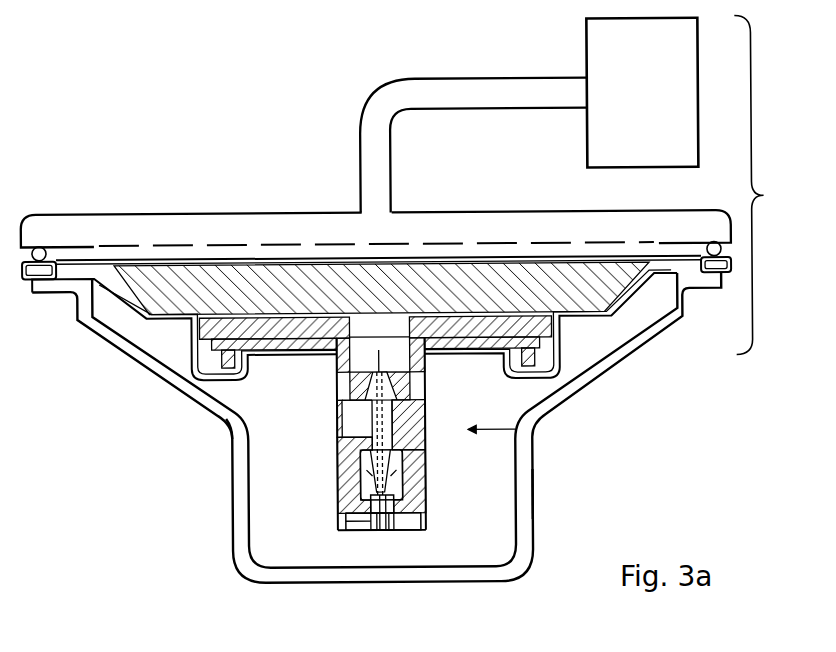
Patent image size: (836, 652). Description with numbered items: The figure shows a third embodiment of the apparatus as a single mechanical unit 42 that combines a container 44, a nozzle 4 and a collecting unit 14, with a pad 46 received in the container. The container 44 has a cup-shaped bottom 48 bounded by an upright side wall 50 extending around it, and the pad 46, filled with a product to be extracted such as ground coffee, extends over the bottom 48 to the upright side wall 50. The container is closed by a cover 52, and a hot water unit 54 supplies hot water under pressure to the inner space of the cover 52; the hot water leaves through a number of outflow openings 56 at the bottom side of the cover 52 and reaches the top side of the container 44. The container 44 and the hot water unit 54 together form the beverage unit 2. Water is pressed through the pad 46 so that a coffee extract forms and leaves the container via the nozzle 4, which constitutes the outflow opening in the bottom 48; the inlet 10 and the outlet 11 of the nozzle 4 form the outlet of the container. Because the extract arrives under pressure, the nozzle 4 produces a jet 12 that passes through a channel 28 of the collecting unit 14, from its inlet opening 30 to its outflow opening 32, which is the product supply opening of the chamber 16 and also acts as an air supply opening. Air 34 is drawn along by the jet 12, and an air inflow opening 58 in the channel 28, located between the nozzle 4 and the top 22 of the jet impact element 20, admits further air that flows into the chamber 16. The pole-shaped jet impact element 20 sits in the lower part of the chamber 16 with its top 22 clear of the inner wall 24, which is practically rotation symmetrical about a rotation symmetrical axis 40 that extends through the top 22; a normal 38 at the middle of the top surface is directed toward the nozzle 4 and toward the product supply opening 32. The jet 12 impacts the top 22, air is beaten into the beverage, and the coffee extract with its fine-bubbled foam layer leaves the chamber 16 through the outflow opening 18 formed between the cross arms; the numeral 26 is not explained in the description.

The beverage unit 2 is at (755, 184).
The nozzle 4 is at (432, 378).
The inlet 10 is at (346, 358).
The outlet 11 is at (440, 400).
The jet 12 is at (404, 488).
The collecting unit 14 is at (533, 434).
The chamber 16 is at (367, 482).
The outflow opening 18 is at (367, 522).
The jet impact element 20 is at (394, 505).
The top 22 is at (352, 522).
The inner wall 24 is at (360, 458).
The base 26 is at (342, 514).
The channel 28 is at (428, 422).
The inlet opening 30 is at (368, 418).
The outflow opening 32 is at (427, 452).
The air 34 is at (337, 428).
The normal 38 is at (383, 531).
The rotation symmetrical axis 40 is at (383, 521).
The unit 42 is at (607, 440).
The container 44 is at (625, 278).
The pad 46 is at (648, 258).
The cup-shaped bottom 48 is at (172, 320).
The upright side wall 50 is at (54, 270).
The cover 52 is at (640, 226).
The hot water unit 54 is at (600, 47).
The outflow openings 56 is at (323, 243).
The air inflow opening 58 is at (231, 432).